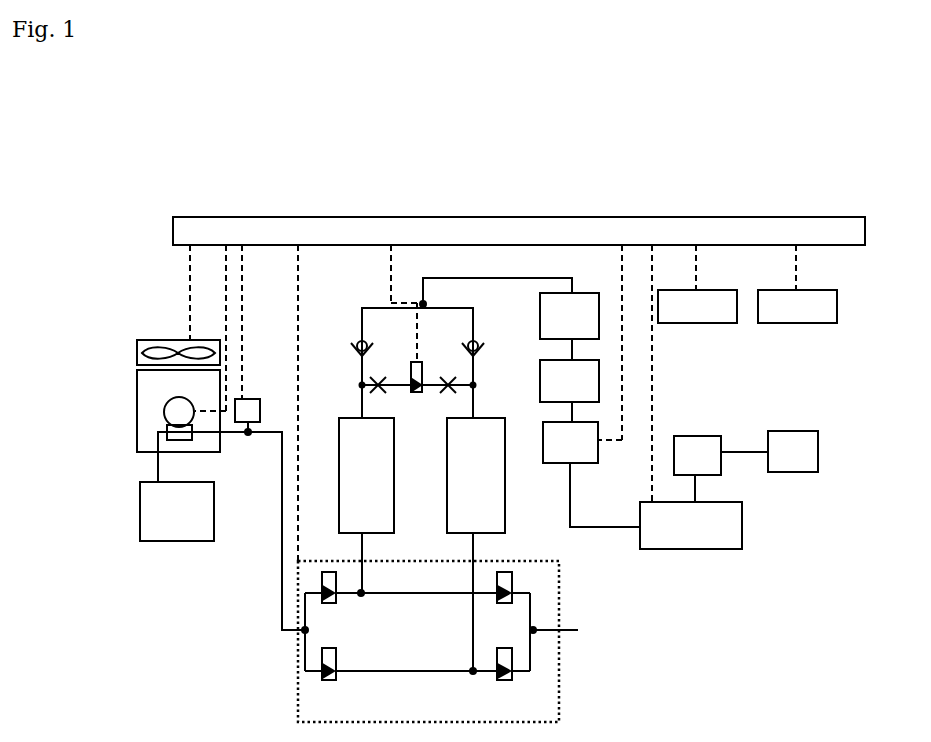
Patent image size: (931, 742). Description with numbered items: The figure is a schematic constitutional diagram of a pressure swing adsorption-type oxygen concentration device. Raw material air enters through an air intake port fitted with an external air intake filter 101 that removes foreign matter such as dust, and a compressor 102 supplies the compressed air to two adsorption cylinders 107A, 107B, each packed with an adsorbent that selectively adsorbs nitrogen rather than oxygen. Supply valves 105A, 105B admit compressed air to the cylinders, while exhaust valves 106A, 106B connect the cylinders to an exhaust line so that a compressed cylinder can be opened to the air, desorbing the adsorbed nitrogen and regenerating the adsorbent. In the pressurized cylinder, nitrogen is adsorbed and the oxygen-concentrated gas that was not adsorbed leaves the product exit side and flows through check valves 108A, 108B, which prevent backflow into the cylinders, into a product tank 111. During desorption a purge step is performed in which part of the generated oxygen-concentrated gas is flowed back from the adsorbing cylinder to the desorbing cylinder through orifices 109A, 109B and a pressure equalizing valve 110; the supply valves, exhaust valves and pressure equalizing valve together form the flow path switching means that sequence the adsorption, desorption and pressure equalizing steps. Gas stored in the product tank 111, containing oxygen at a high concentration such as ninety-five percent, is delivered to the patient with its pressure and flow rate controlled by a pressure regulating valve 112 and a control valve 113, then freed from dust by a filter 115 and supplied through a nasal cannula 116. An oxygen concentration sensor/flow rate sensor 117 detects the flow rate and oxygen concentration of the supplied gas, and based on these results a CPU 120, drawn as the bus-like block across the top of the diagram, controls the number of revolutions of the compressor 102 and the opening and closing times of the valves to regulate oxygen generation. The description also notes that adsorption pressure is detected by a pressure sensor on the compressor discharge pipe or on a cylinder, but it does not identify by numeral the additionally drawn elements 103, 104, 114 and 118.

The external air intake filter 101 is at (177, 511).
The compressor 102 is at (181, 348).
The cooling fan 103 is at (178, 305).
The sensor 104 is at (260, 340).
The supply valve 105A is at (338, 599).
The supply valve 105B is at (336, 680).
The exhaust valve 106A is at (504, 599).
The exhaust valve 106B is at (504, 680).
The adsorption cylinder 107A is at (366, 505).
The adsorption cylinder 107B is at (476, 544).
The check valve 108A is at (345, 339).
The check valve 108B is at (490, 339).
The orifice 109A is at (388, 395).
The orifice 109B is at (453, 395).
The pressure equalizing valve 110 is at (423, 318).
The product tank 111 is at (569, 316).
The pressure regulating valve 112 is at (569, 381).
The control valve 113 is at (582, 354).
The control unit 114 is at (691, 397).
The filter 115 is at (697, 469).
The nasal cannula 116 is at (793, 451).
The oxygen concentration sensor/flow rate sensor 117 is at (697, 284).
The display unit 118 is at (797, 284).
The CPU 120 is at (519, 231).